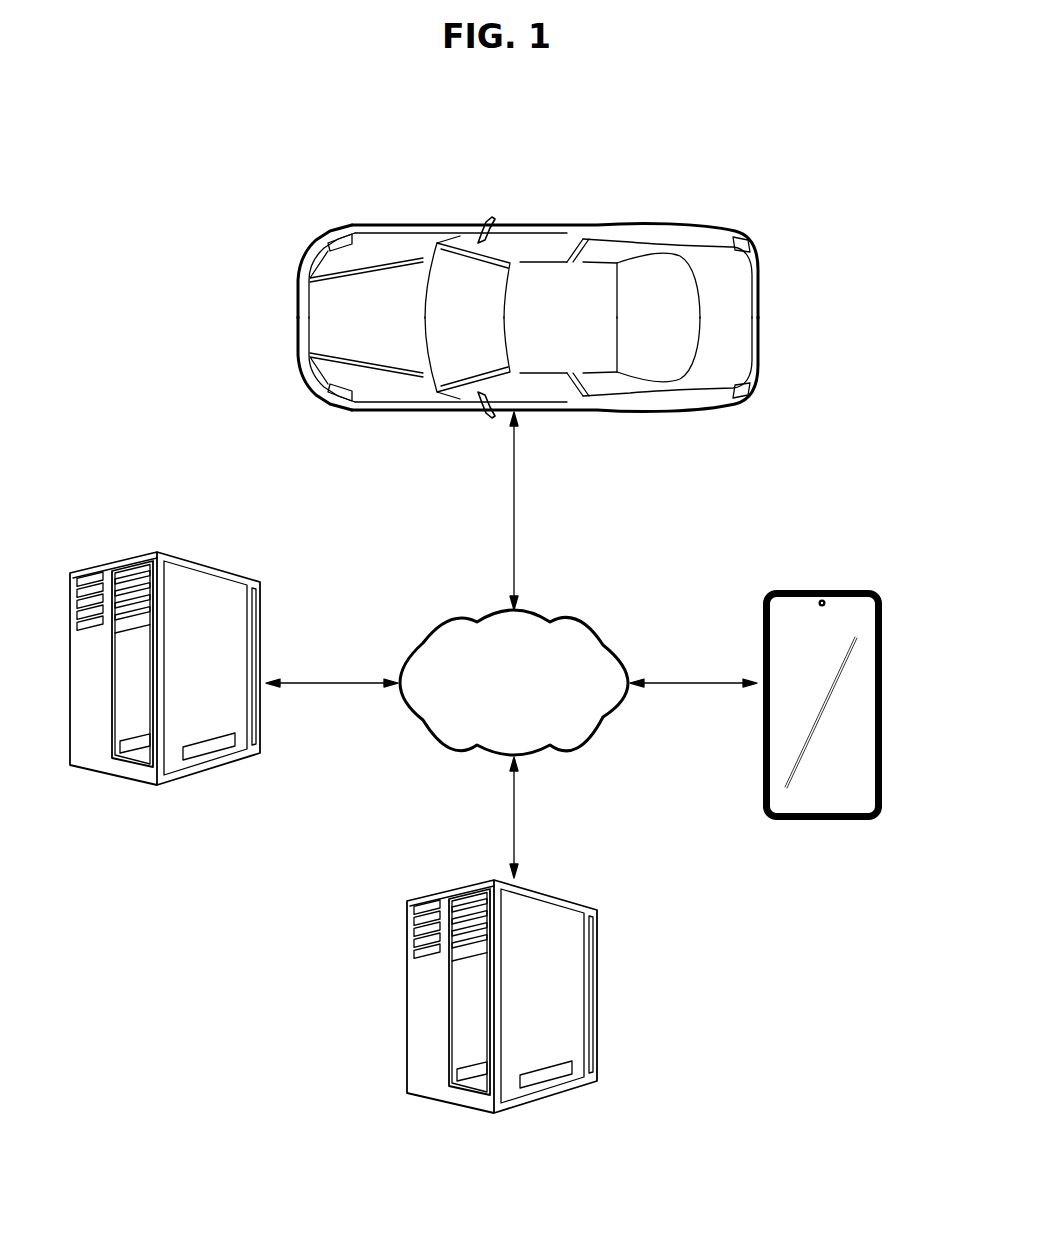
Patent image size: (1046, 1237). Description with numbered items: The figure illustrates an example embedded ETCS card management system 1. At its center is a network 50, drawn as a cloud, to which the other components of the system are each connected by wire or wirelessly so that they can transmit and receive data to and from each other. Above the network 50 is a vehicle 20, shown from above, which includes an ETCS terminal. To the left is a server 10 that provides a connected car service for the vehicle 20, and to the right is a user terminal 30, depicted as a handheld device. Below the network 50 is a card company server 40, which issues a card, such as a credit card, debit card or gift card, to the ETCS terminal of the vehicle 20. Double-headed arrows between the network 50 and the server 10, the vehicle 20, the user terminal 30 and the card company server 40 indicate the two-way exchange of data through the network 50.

The ETCS card management system 1 is at (812, 147).
The server 10 is at (127, 556).
The vehicle 20 is at (544, 231).
The user terminal 30 is at (863, 680).
The card company server 40 is at (463, 885).
The network 50 is at (588, 626).